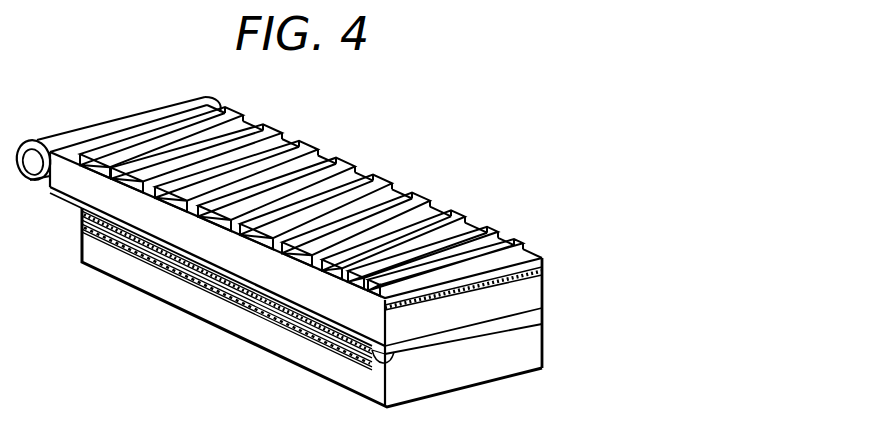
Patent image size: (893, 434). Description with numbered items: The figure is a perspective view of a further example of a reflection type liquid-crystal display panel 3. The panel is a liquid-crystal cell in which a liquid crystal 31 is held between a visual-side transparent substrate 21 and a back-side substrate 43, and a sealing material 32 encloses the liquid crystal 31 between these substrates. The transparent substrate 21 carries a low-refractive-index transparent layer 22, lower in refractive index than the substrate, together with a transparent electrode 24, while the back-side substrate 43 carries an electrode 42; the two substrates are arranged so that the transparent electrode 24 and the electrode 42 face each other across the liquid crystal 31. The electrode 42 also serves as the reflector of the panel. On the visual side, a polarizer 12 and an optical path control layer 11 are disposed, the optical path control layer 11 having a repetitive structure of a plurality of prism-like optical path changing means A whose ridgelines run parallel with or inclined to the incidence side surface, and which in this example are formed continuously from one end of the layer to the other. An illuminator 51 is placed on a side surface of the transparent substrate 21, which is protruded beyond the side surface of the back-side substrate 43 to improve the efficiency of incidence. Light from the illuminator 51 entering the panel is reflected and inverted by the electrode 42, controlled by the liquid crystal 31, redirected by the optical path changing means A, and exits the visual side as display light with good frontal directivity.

The liquid-crystal display panel 3 is at (156, 322).
The illuminator 51 is at (40, 138).
The optical path changing means A is at (430, 205).
The optical path control layer 11 is at (530, 257).
The polarizer 12 is at (547, 264).
The transparent substrate (visual-side substrate) 21 is at (545, 288).
The low-refractive-index transparent layer 22 is at (545, 312).
The sealing material 32 is at (545, 330).
The back-side substrate 43 is at (545, 355).
The liquid crystal 31 is at (260, 302).
The transparent electrode 24 is at (297, 315).
The electrode 42 is at (325, 338).